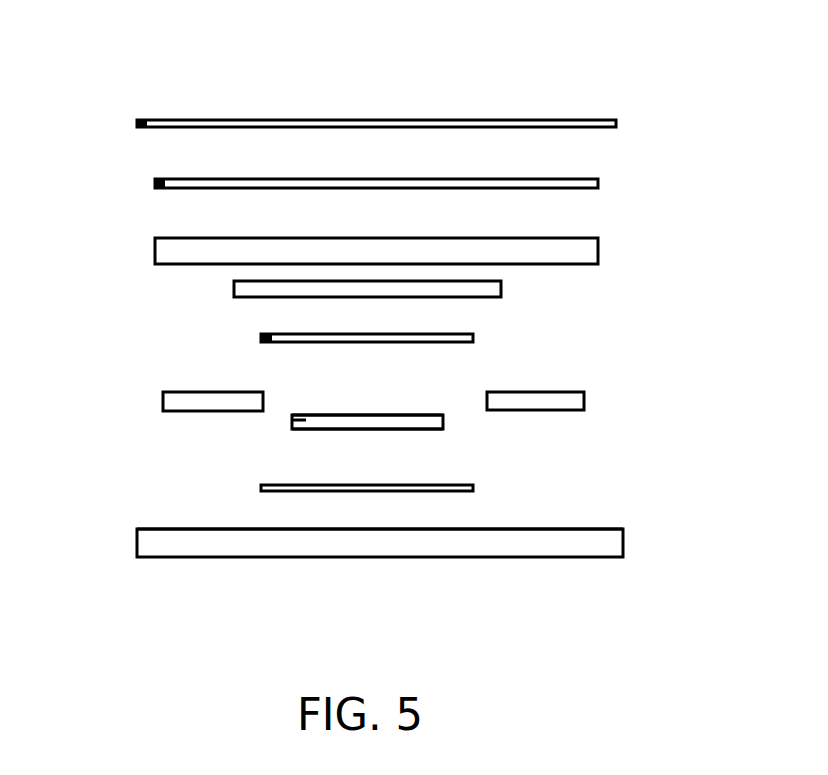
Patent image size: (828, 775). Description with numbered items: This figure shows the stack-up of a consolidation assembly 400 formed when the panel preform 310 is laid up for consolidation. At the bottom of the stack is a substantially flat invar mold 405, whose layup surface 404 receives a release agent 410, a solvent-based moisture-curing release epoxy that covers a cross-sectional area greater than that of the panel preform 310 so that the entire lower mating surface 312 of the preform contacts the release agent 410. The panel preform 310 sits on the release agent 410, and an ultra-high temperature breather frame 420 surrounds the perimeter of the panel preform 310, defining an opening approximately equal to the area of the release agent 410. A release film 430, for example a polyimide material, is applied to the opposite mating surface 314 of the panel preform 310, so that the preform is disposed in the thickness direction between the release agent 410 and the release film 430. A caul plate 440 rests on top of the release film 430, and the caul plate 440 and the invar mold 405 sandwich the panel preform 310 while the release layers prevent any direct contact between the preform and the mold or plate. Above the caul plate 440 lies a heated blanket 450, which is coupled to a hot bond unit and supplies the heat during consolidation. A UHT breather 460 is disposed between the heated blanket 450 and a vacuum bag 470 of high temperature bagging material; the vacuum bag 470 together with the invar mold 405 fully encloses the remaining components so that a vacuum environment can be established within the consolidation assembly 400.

The consolidation assembly 400 is at (138, 65).
The vacuum bag 470 is at (332, 139).
The UHT breather 460 is at (332, 198).
The heated blanket 450 is at (333, 263).
The caul plate 440 is at (328, 300).
The release film 430 is at (322, 353).
The UHT breather frame 420 is at (377, 401).
The panel preform 310 is at (325, 435).
The mating surface 314 is at (367, 388).
The mating surface 312 is at (396, 451).
The release agent 410 is at (322, 505).
The invar mold 405 is at (335, 554).
The layup surface 404 is at (380, 490).